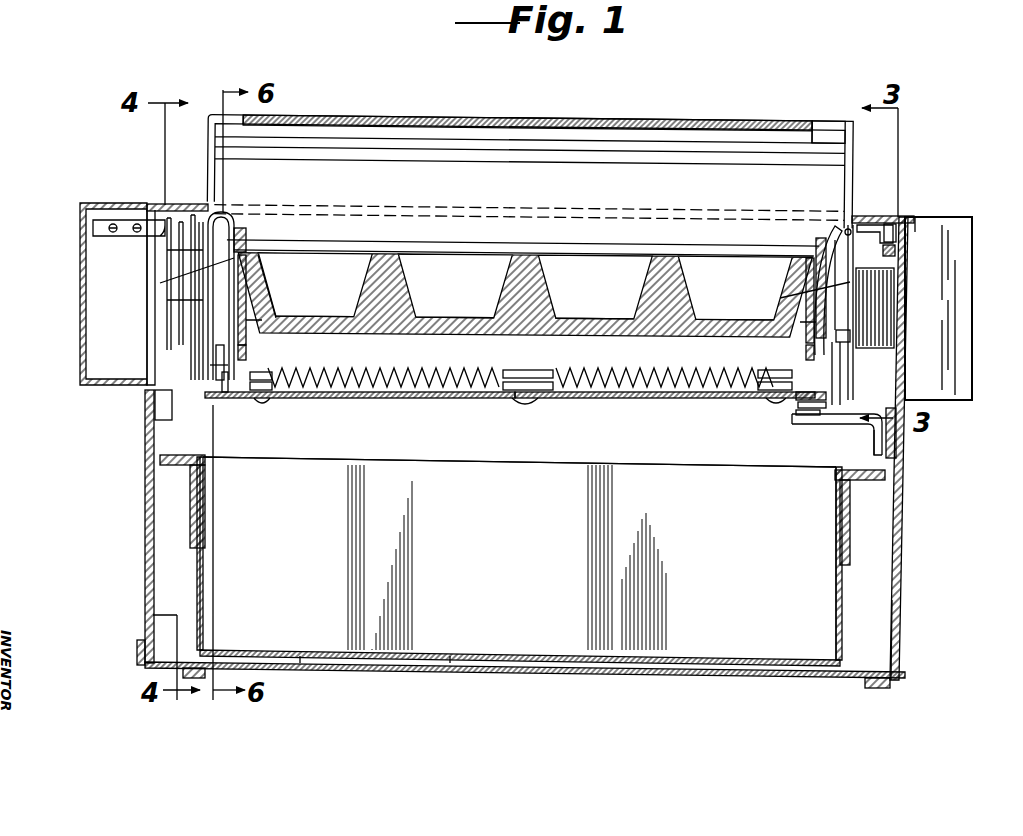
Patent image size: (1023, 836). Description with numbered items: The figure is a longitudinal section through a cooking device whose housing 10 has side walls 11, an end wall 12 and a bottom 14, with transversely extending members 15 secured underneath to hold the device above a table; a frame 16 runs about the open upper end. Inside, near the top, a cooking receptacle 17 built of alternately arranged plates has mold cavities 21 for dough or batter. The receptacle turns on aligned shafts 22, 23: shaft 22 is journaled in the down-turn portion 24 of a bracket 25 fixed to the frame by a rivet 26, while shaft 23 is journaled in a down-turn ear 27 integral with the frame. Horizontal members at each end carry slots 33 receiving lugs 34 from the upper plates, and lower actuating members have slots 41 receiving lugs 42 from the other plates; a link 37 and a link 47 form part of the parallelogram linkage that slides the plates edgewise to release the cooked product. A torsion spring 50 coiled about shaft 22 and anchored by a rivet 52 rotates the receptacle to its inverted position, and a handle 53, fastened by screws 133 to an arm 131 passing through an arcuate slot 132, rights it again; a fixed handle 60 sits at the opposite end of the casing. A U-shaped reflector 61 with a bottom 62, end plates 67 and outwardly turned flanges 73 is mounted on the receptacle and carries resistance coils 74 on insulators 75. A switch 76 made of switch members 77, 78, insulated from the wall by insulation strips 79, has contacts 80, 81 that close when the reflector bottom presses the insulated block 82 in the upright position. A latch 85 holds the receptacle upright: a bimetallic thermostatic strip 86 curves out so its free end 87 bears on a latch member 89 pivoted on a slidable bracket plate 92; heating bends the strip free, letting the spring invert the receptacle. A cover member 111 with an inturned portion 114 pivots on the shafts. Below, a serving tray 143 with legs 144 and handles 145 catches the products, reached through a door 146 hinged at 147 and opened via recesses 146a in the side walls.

The housing 10 is at (903, 540).
The side walls 11 is at (870, 663).
The wall 12 is at (900, 636).
The bottom 14 is at (658, 662).
The transversely extending members 15 is at (885, 686).
The frame 16 is at (888, 216).
The cooking receptacle 17 is at (582, 337).
The mold cavities 21 is at (746, 292).
The shaft 22 is at (895, 251).
The shaft 23 is at (246, 272).
The down-turn portion 24 is at (816, 252).
The bracket 25 is at (870, 224).
The rivet 26 is at (890, 222).
The down-turn ear 27 is at (226, 240).
The slots 33 is at (806, 262).
The lugs 34 is at (160, 283).
The link 37 is at (222, 382).
The slots 41 is at (266, 300).
The lugs 42 is at (812, 322).
The link 47 is at (216, 360).
The spring 50 is at (894, 282).
The rivet 52 is at (852, 340).
The handle 53 is at (80, 336).
The fixed handle 60 is at (972, 272).
The heating shield or reflector 61 is at (432, 398).
The bottom 62 is at (608, 398).
The end plate 67 is at (806, 352).
The flanges 73 is at (220, 211).
The resistance coils 74 is at (660, 392).
The insulators 75 is at (760, 400).
The switch 76 is at (872, 428).
The switch member 77 is at (818, 426).
The switch member 78 is at (832, 412).
The insulation strips 79 is at (896, 448).
The contact 80 is at (798, 414).
The contact 81 is at (800, 406).
The block of insulated material 82 is at (796, 398).
The latch 85 is at (826, 196).
The bimetallic thermostatic strip 86 is at (815, 238).
The free end 87 is at (852, 228).
The latch member 89 is at (852, 230).
The bracket plate 92 is at (912, 220).
The cover member 111 is at (830, 120).
The inturned portion 114 is at (656, 126).
The arm 131 is at (122, 236).
The arcuate slot 132 is at (150, 338).
The screws 133 is at (137, 224).
The serving tray 143 is at (530, 656).
The legs 144 is at (790, 675).
The handles 145 is at (878, 480).
The door 146 is at (145, 540).
The recesses 146a is at (158, 410).
The hinge 147 is at (145, 665).